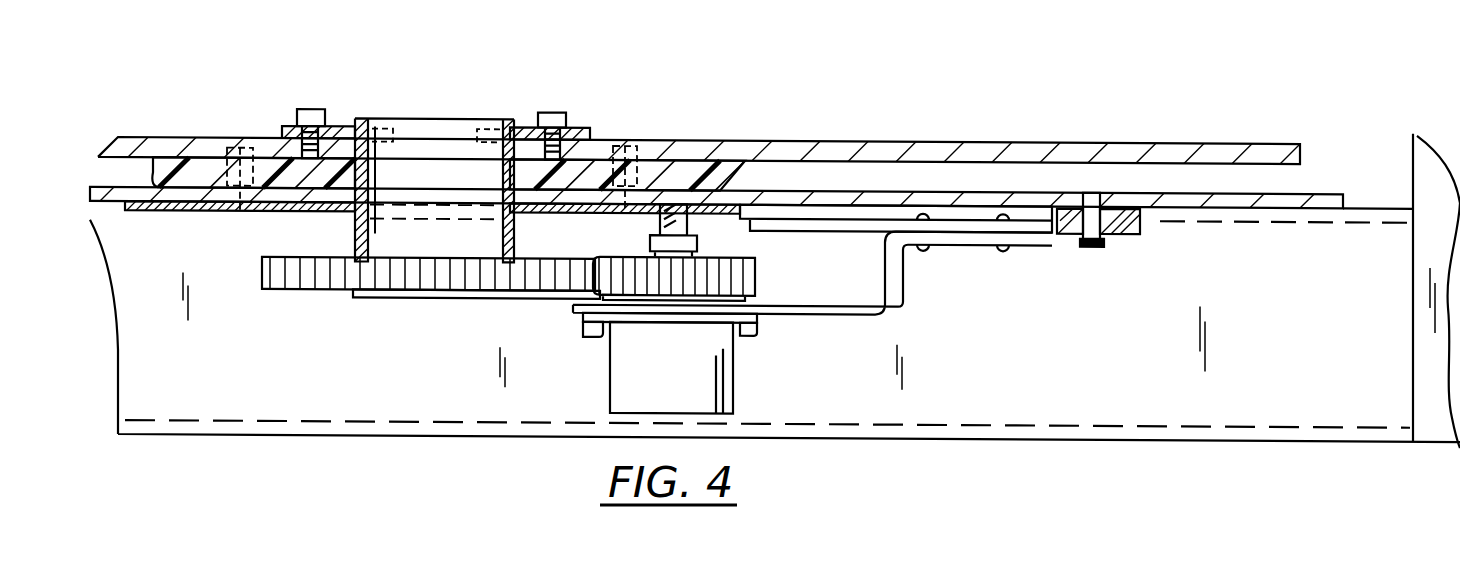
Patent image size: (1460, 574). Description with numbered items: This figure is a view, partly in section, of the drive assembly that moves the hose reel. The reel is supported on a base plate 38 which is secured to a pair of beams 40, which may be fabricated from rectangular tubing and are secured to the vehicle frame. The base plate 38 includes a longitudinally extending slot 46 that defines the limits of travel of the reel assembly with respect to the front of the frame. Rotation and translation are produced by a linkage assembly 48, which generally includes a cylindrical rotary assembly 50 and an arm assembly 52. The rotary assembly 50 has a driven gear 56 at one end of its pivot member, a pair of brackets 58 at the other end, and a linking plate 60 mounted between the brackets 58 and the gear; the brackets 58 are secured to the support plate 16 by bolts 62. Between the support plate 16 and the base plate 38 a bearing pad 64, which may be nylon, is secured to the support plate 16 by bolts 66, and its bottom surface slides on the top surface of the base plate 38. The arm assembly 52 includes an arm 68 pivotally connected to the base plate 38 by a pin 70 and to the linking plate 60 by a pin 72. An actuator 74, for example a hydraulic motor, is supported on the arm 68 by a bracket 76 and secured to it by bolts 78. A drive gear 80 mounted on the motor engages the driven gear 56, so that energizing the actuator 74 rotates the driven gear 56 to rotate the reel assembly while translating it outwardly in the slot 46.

The support plate 16 is at (1280, 92).
The base plate 38 is at (1330, 187).
The beams 40 is at (1085, 434).
The slot 46 is at (490, 248).
The linkage assembly 48 is at (430, 350).
The cylindrical rotary assembly 50 is at (352, 302).
The arm assembly 52 is at (748, 358).
The driven gear 56 is at (262, 275).
The brackets 58 is at (588, 126).
The linking plate 60 is at (157, 220).
The bolts 62 is at (553, 108).
The bearing pad 64 is at (725, 172).
The bolts 66 is at (608, 221).
The arm 68 is at (1148, 230).
The pin 70 is at (1103, 237).
The pin 72 is at (695, 249).
The actuator 74 is at (610, 388).
The bracket 76 is at (888, 290).
The bolts 78 is at (757, 325).
The drive gear 80 is at (757, 276).